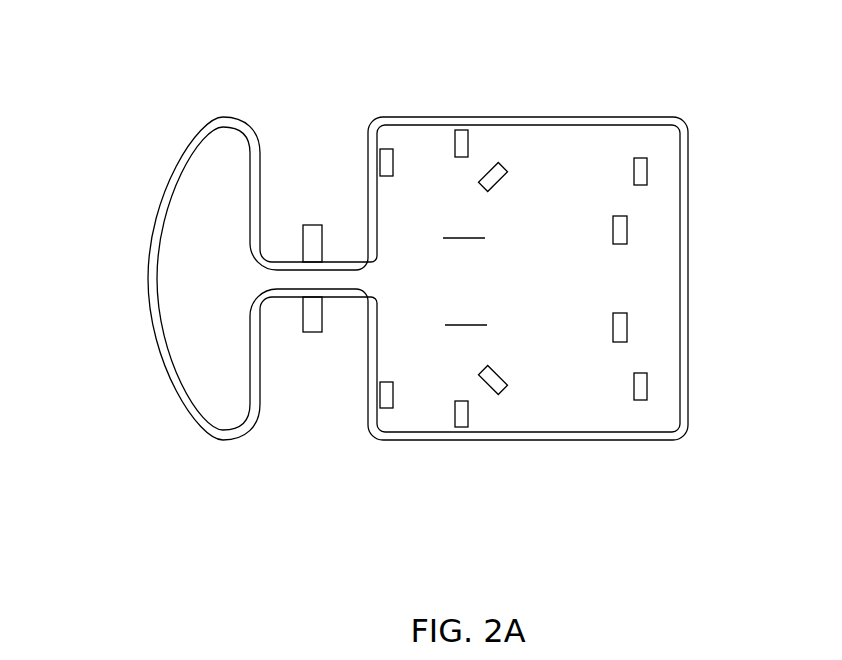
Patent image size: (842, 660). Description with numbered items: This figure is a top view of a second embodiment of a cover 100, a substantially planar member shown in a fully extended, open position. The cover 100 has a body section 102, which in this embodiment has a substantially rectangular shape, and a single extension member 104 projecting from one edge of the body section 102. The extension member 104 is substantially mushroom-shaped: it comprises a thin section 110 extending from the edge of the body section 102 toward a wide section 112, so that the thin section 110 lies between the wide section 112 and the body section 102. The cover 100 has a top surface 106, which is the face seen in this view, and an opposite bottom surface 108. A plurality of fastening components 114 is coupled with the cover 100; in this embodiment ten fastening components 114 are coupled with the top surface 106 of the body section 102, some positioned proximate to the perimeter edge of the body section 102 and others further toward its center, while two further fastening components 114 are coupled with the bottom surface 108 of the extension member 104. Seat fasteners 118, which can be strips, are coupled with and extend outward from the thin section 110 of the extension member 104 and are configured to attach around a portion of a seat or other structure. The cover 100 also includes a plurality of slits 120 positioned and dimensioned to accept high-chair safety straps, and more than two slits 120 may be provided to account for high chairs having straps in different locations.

The cover 100 is at (404, 298).
The body section 102 is at (557, 193).
The extension member 104 is at (193, 274).
The top surface 106 is at (647, 286).
The bottom surface 108 is at (695, 238).
The thin section 110 is at (348, 282).
The wide section 112 is at (223, 375).
The fastening components 114 is at (385, 403).
The seat fasteners 118 is at (314, 238).
The slits 120 is at (470, 246).